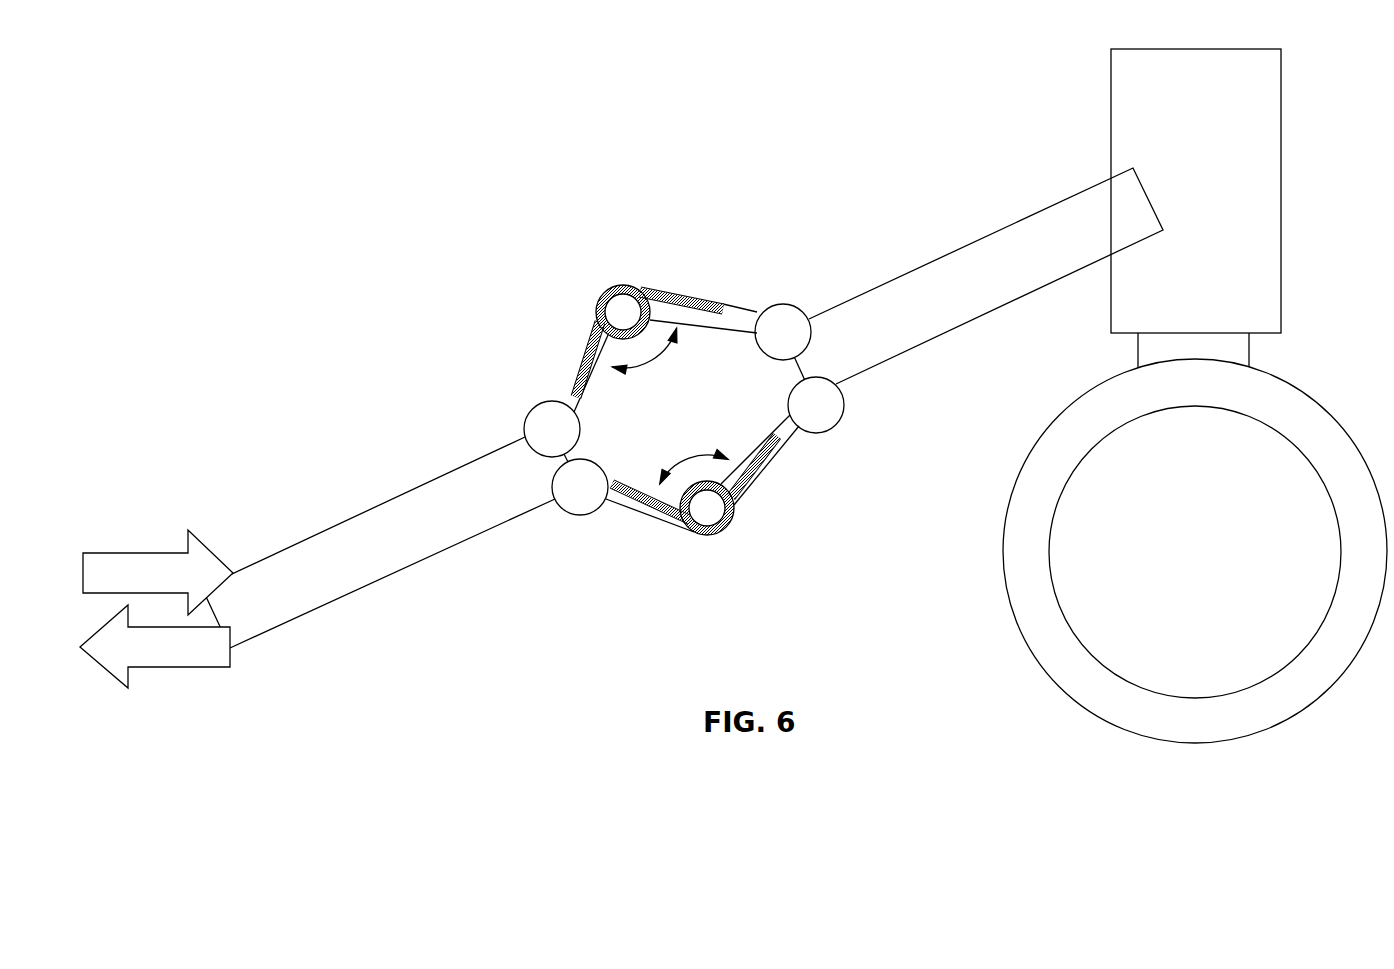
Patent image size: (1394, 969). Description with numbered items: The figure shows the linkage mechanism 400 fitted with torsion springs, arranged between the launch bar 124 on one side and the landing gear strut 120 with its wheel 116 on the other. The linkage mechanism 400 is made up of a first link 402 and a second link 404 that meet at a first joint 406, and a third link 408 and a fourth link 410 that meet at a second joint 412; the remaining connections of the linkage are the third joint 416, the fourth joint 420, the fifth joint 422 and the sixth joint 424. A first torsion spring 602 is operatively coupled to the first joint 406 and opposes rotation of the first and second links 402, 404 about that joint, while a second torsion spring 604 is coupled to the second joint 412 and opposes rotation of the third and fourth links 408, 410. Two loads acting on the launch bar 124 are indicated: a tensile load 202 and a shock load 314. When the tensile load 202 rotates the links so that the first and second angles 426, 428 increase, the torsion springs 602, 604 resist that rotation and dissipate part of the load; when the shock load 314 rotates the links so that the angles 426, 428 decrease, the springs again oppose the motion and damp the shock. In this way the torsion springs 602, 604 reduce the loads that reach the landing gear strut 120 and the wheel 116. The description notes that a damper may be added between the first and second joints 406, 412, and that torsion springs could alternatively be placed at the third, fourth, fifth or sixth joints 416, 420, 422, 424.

The wheel 116 is at (1004, 565).
The landing gear strut 120 is at (1110, 108).
The launch bar 124 is at (327, 527).
The tensile load 202 is at (150, 668).
The shock load 314 is at (167, 551).
The linkage mechanism 400 is at (545, 209).
The first link 402 is at (566, 382).
The second link 404 is at (735, 302).
The first joint 406 is at (615, 288).
The third link 408 is at (655, 518).
The fourth link 410 is at (787, 450).
The second joint 412 is at (712, 540).
The third joint 416 is at (525, 428).
The fourth joint 420 is at (797, 308).
The fifth joint 422 is at (577, 515).
The sixth joint 424 is at (838, 426).
The first angle 426 is at (663, 355).
The second angle 428 is at (686, 461).
The first torsion spring 602 is at (597, 326).
The second torsion spring 604 is at (740, 503).